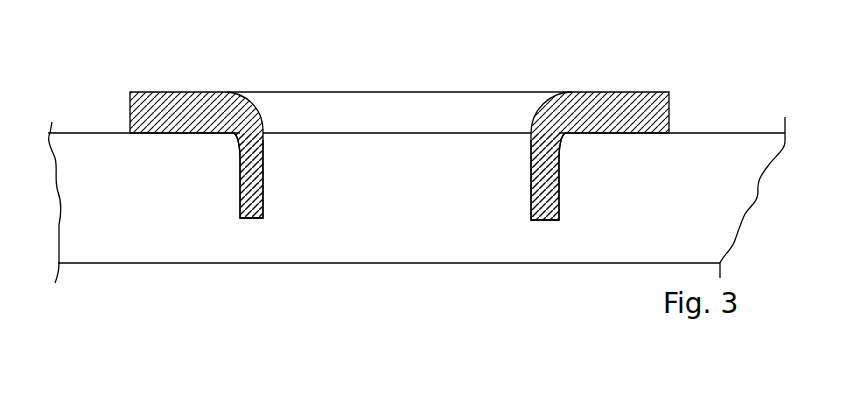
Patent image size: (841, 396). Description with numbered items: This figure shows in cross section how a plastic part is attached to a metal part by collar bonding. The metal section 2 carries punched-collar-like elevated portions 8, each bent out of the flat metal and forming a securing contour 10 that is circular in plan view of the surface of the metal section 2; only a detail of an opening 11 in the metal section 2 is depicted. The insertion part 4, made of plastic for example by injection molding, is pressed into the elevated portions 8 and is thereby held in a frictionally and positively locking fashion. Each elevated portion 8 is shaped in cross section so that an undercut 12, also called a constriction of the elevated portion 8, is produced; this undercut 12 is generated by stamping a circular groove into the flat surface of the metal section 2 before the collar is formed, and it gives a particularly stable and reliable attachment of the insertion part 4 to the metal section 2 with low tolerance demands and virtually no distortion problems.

The metal section 2 is at (172, 96).
The insertion part 4 is at (90, 155).
The elevated portion 8 is at (238, 219).
The securing contour 10 is at (252, 238).
The opening 11 is at (400, 66).
The undercut 12 is at (223, 153).